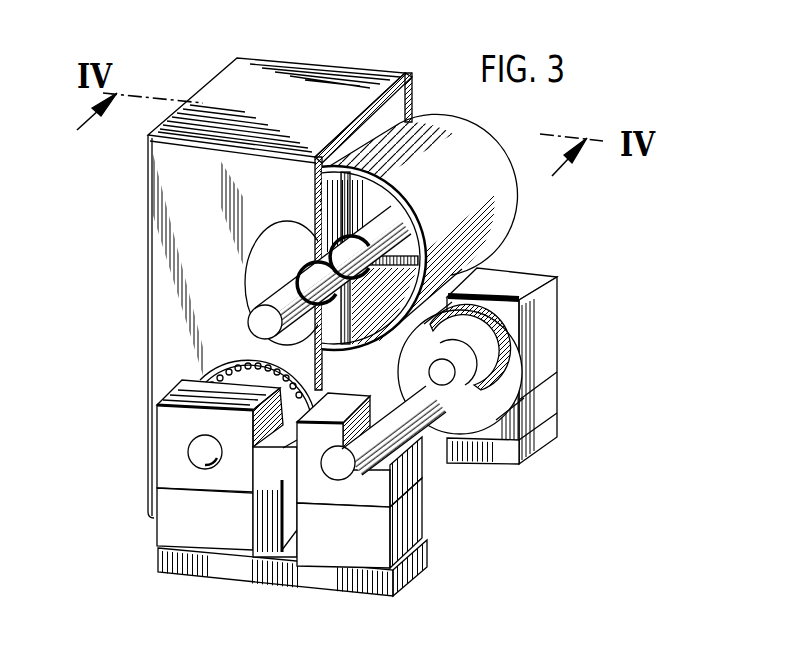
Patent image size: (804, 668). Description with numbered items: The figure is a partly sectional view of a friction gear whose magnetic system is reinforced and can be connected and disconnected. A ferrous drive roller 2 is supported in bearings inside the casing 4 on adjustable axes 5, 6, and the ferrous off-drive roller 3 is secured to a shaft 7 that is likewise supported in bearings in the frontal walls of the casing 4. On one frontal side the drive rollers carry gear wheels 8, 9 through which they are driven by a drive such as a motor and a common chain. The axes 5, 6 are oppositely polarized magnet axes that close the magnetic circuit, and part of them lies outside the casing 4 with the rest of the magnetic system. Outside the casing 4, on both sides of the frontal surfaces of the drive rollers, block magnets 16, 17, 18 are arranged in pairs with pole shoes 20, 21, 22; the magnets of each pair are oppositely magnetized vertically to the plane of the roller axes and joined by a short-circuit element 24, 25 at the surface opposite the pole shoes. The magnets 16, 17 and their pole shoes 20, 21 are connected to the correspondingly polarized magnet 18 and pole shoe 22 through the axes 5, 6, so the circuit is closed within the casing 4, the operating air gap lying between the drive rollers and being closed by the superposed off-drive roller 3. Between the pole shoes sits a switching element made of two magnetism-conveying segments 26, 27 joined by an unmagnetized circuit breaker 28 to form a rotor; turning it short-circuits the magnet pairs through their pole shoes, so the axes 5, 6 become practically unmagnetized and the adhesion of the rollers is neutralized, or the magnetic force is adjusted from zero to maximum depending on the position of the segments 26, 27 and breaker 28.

The drive roller 2 is at (477, 323).
The off-drive roller 3 is at (472, 193).
The casing 4 is at (350, 82).
The adjustable axis 5 is at (200, 442).
The adjustable axis 6 is at (410, 497).
The shaft 7 is at (290, 300).
The gear wheel 8 is at (243, 365).
The gear wheel 9 is at (480, 462).
The block magnet 16 is at (172, 532).
The block magnet 17 is at (413, 535).
The block magnet 18 is at (553, 392).
The pole shoe 20 is at (172, 455).
The pole shoe 21 is at (413, 470).
The pole shoe 22 is at (553, 338).
The short-circuit element 24 is at (413, 563).
The short-circuit element 25 is at (552, 438).
The segment 26 is at (248, 495).
The segment 27 is at (316, 498).
The circuit breaker 28 is at (274, 492).